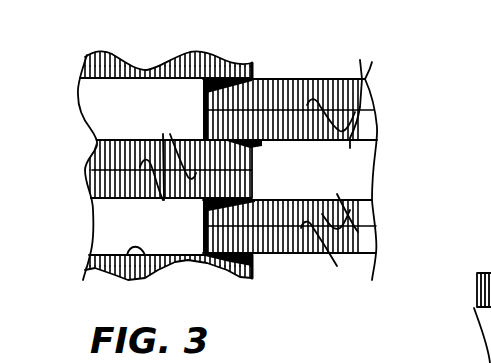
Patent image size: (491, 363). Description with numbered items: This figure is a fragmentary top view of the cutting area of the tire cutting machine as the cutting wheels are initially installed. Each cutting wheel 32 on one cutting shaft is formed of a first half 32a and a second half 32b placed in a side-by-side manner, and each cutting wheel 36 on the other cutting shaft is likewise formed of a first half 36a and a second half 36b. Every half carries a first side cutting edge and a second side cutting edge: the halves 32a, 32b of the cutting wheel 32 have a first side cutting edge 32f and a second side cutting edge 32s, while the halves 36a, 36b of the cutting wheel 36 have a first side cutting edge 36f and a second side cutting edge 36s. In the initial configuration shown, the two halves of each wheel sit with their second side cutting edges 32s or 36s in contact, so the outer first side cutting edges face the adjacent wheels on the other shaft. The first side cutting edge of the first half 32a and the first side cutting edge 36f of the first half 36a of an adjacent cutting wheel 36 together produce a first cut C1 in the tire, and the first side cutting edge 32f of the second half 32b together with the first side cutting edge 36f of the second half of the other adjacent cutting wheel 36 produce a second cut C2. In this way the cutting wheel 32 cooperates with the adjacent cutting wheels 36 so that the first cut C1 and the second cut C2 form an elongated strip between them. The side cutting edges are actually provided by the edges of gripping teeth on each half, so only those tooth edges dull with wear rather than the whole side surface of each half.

The cutting wheel 32 is at (70, 67).
The first half 32a is at (110, 155).
The second half 32b is at (167, 72).
The first side cutting edge 32f is at (113, 78).
The second side cutting edge 32s is at (168, 205).
The cutting wheel 36 is at (395, 97).
The first half 36a is at (370, 125).
The second half 36b is at (302, 94).
The first side cutting edge 36f is at (268, 78).
The second side cutting edge 36s is at (342, 165).
The first cut C1 is at (389, 150).
The second cut C2 is at (366, 193).